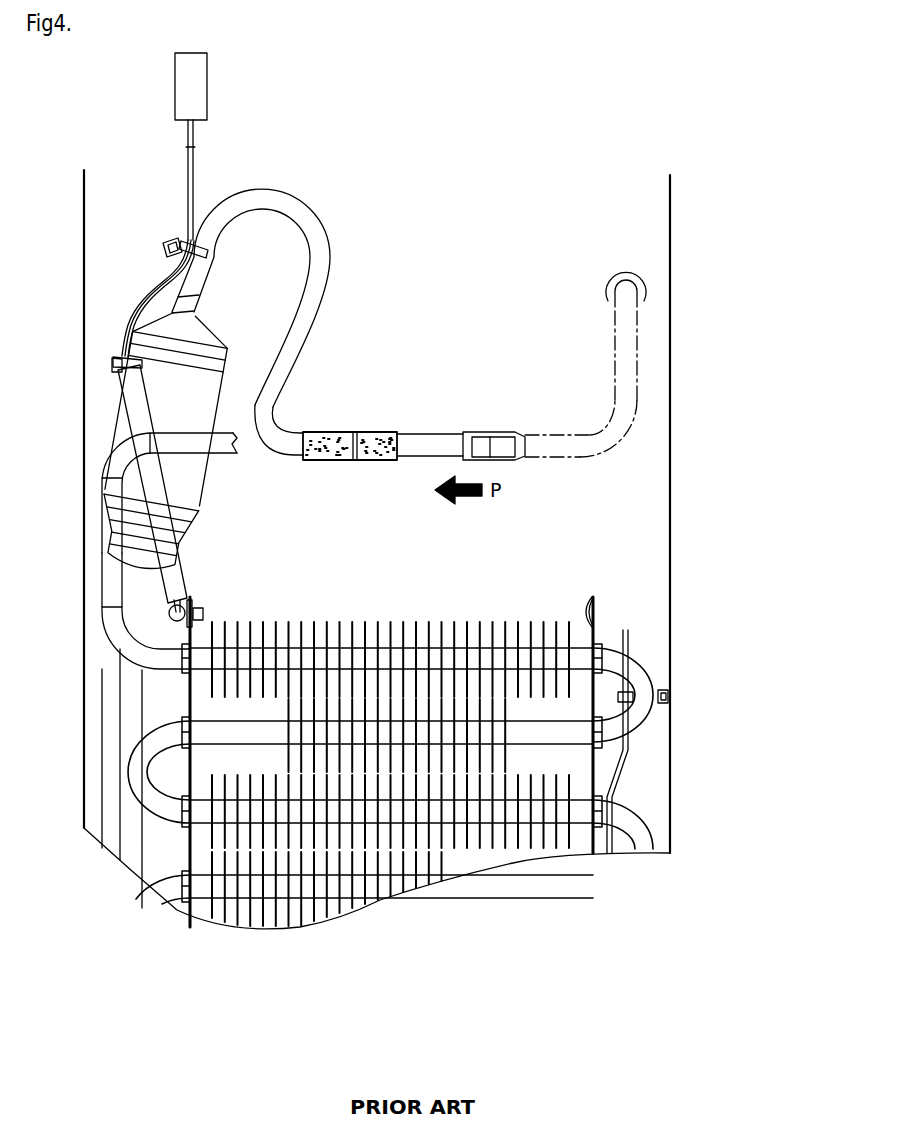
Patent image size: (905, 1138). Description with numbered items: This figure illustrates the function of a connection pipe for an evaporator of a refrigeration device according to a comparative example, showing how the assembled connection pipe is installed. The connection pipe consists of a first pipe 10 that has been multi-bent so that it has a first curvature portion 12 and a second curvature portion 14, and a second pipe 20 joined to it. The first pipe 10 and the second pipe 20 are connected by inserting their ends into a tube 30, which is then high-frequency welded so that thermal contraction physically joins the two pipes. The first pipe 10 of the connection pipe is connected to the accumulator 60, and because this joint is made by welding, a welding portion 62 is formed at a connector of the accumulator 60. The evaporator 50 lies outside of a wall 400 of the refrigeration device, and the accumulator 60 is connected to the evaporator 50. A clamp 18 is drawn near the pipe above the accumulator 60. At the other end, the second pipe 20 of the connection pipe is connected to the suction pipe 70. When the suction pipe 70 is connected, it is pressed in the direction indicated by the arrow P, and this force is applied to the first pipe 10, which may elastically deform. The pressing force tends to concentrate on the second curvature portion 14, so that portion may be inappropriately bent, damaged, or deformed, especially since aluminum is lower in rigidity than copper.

The first pipe 10 is at (317, 335).
The first curvature portion 12 is at (318, 226).
The second curvature portion 14 is at (277, 440).
The clamp 18 is at (180, 285).
The second pipe 20 is at (448, 438).
The tube 30 is at (351, 432).
The evaporator 50 is at (383, 848).
The accumulator 60 is at (178, 395).
The welding portion 62 is at (173, 299).
The suction pipe 70 is at (624, 361).
The wall 400 is at (675, 210).